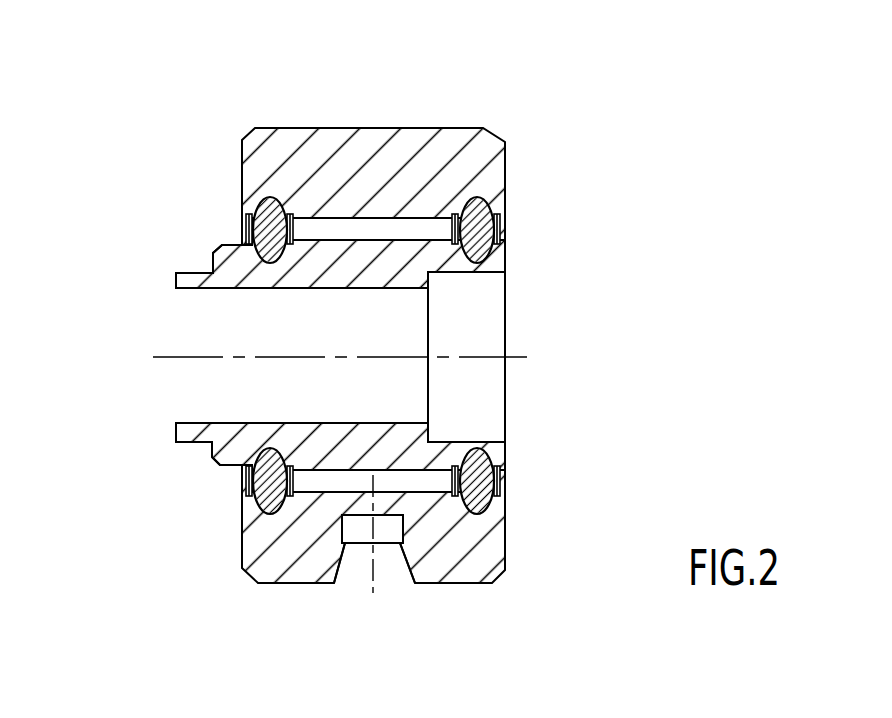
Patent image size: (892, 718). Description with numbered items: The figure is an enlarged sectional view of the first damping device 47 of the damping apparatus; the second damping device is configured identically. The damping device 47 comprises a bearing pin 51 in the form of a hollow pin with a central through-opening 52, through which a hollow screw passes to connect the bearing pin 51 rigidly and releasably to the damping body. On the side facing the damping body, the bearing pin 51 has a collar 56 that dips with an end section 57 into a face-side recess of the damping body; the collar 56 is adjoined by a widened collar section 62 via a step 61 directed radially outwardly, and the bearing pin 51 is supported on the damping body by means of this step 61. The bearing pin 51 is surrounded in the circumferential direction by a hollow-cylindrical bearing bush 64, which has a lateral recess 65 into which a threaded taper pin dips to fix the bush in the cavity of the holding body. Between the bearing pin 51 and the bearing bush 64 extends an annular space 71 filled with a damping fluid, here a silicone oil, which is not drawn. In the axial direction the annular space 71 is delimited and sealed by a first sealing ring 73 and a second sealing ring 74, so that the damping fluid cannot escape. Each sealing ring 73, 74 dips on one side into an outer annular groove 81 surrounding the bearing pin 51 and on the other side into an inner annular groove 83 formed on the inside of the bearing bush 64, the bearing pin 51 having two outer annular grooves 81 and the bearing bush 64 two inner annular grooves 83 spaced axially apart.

The first damping device 47 is at (407, 118).
The bearing pin 51 is at (438, 255).
The central through-opening 52 is at (407, 288).
The collar 56 is at (207, 256).
The end section 57 is at (180, 448).
The step 61 is at (202, 455).
The widened collar section 62 is at (227, 467).
The bearing bush 64 is at (457, 152).
The lateral recess 65 is at (342, 560).
The annular space 71 is at (350, 236).
The first sealing ring 73 is at (501, 223).
The second sealing ring 74 is at (268, 197).
The outer annular groove 81 is at (270, 450).
The inner annular groove 83 is at (255, 503).